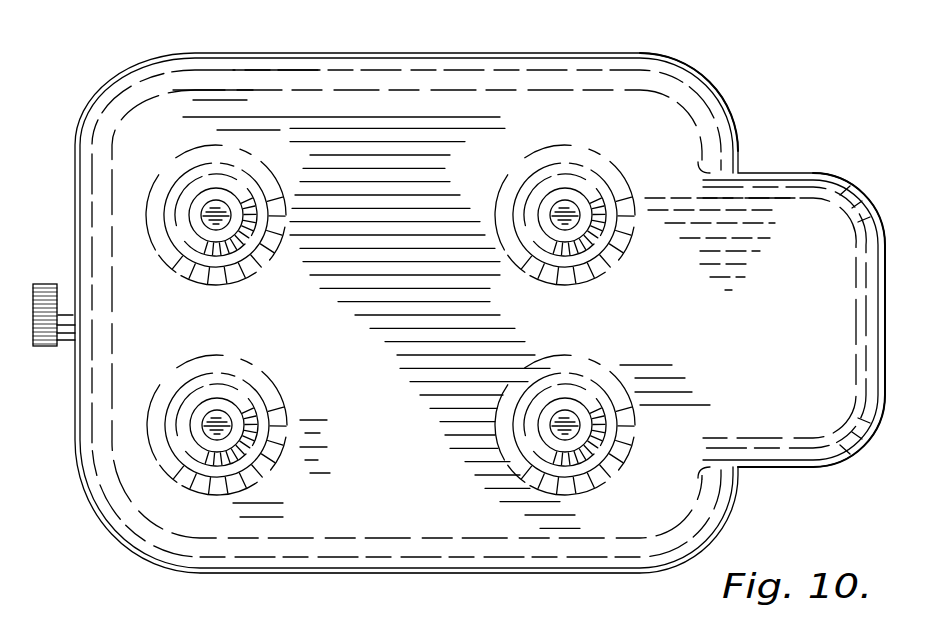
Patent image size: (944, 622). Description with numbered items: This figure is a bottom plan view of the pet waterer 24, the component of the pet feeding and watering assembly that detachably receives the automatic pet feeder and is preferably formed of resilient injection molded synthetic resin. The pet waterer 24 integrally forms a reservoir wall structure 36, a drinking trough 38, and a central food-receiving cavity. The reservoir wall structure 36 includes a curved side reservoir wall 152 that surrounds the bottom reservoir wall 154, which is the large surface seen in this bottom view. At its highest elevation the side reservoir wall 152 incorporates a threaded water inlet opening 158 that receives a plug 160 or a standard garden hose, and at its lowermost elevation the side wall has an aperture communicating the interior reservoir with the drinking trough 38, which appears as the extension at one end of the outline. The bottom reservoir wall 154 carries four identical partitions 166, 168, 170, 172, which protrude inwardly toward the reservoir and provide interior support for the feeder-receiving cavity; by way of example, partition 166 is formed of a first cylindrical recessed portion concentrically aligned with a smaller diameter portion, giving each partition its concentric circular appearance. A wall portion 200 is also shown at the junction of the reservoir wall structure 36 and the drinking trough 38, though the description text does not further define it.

The side reservoir wall 152 is at (63, 212).
The pet waterer 24 is at (478, 72).
The reservoir wall structure 36 is at (706, 78).
The drinking trough 38 is at (795, 197).
The bottom reservoir wall 154 is at (353, 500).
The threaded water inlet opening 158 is at (68, 293).
The plug 160 is at (43, 347).
The partition 166 is at (223, 278).
The partition 168 is at (577, 155).
The partition 170 is at (230, 373).
The partition 172 is at (568, 368).
The wall portion 200 is at (773, 468).